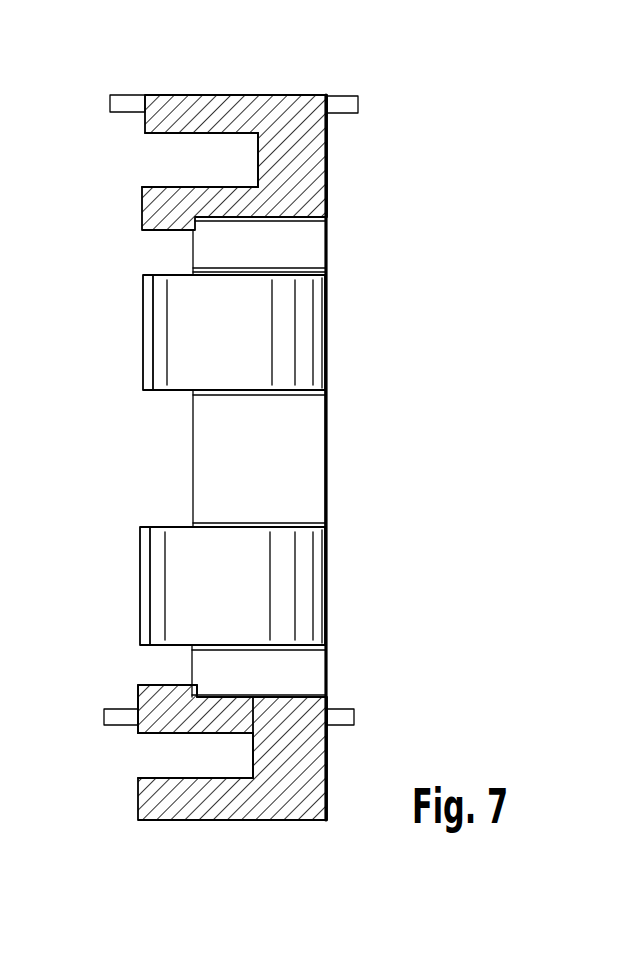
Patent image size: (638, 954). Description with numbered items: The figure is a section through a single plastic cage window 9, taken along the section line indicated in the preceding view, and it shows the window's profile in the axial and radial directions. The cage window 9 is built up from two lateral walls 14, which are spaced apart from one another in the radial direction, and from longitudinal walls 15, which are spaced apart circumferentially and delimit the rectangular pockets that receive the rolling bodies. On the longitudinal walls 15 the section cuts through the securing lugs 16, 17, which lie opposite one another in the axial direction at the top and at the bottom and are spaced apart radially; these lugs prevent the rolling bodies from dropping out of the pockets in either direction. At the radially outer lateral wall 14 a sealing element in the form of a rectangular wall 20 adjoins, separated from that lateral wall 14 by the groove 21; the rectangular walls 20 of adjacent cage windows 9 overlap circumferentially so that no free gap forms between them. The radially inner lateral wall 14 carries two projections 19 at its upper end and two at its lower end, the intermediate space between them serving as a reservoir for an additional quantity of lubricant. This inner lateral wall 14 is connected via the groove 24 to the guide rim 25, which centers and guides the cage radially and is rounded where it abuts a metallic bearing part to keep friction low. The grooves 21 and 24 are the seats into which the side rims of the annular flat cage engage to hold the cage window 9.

The cage window 9 is at (445, 152).
The lateral wall 14 is at (143, 210).
The longitudinal wall 15 is at (307, 472).
The securing lug 16 is at (148, 327).
The securing lug 17 is at (317, 343).
The projection 19 is at (120, 717).
The rectangular wall 20 is at (345, 105).
The groove 21 is at (157, 158).
The groove 24 is at (173, 758).
The guide rim 25 is at (195, 805).